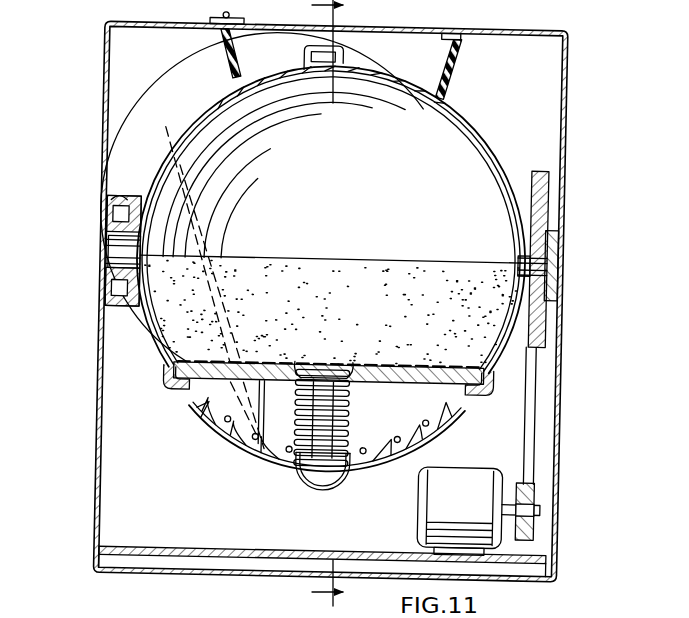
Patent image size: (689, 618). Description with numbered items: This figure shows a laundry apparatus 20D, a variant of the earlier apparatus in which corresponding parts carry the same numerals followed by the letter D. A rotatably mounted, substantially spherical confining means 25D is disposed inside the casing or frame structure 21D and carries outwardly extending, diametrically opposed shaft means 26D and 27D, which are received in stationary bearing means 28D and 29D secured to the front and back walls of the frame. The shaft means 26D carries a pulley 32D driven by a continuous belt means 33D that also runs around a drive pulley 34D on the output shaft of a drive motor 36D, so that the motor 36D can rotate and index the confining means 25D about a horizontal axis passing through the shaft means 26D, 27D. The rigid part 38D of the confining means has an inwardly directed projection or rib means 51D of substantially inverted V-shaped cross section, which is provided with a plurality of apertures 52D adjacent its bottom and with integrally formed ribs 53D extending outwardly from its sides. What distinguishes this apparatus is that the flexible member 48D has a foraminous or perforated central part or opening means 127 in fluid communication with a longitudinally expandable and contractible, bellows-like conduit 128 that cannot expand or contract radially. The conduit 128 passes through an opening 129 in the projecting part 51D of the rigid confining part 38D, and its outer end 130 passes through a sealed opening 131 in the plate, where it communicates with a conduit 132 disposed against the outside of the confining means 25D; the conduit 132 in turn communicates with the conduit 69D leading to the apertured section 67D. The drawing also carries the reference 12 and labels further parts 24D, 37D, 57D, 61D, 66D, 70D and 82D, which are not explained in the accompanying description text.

The section line 12- 12 is at (350, 305).
The laundry apparatus 20D is at (379, 309).
The casing 21D is at (570, 101).
The top cover 24D is at (382, 27).
The spherical confining means 25D is at (331, 250).
The shaft means 26D is at (556, 249).
The shaft means 27D is at (89, 232).
The stationary bearing means 28D is at (563, 233).
The stationary bearing means 29D is at (105, 236).
The pulley 32D is at (575, 260).
The continuous belt means 33D is at (538, 428).
The drive pulley 34D is at (548, 519).
The drive motor 36D is at (521, 500).
The tub wall 37D is at (494, 151).
The rigid part 38D is at (508, 349).
The flexible member 48D is at (455, 260).
The projection 51D is at (316, 409).
The apertures 52D is at (228, 422).
The ribs 53D is at (250, 440).
The perforations 57D is at (236, 446).
The agitator 61D is at (246, 361).
The tub rim 66D is at (367, 64).
The apertured section 67D is at (323, 78).
The conduit 69D is at (211, 107).
The seal 70D is at (126, 200).
The drain fitting 82D is at (168, 384).
The perforated central part 127 is at (333, 362).
The bellows-like conduit 128 is at (355, 405).
The opening 129 is at (303, 366).
The outer end 130 is at (336, 485).
The sealed opening 131 is at (340, 487).
The conduit 132 is at (316, 490).